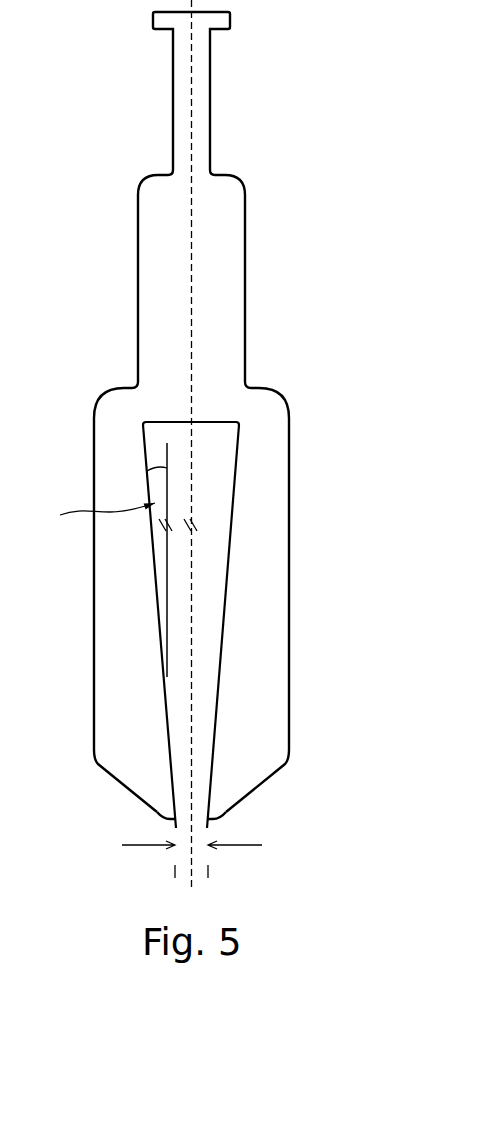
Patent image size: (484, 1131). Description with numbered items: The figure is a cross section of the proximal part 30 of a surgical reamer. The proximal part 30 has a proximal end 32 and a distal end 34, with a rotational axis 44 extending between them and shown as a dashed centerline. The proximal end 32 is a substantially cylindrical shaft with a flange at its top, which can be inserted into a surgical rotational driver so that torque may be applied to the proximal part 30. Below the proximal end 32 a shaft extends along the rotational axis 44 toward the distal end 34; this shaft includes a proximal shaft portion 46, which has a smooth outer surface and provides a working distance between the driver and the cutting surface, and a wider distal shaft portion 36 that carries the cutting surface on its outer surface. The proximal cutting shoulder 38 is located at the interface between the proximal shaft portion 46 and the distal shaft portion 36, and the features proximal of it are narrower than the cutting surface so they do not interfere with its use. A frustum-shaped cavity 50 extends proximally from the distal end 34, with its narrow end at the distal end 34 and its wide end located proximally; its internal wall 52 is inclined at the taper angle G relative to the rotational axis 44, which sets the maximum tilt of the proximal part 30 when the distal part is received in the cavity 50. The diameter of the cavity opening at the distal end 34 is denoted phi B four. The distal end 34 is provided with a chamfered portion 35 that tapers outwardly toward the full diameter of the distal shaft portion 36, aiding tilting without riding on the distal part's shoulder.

The proximal part 30 is at (280, 145).
The proximal end 32 is at (209, 80).
The distal end 34 is at (225, 822).
The chamfered portion 35 is at (128, 795).
The distal shaft portion 36 is at (290, 553).
The proximal cutting shoulder 38 is at (272, 393).
The rotational axis 44 is at (195, 357).
The proximal shaft portion 46 is at (216, 278).
The cavity 50 is at (210, 475).
The internal wall 52 is at (222, 643).